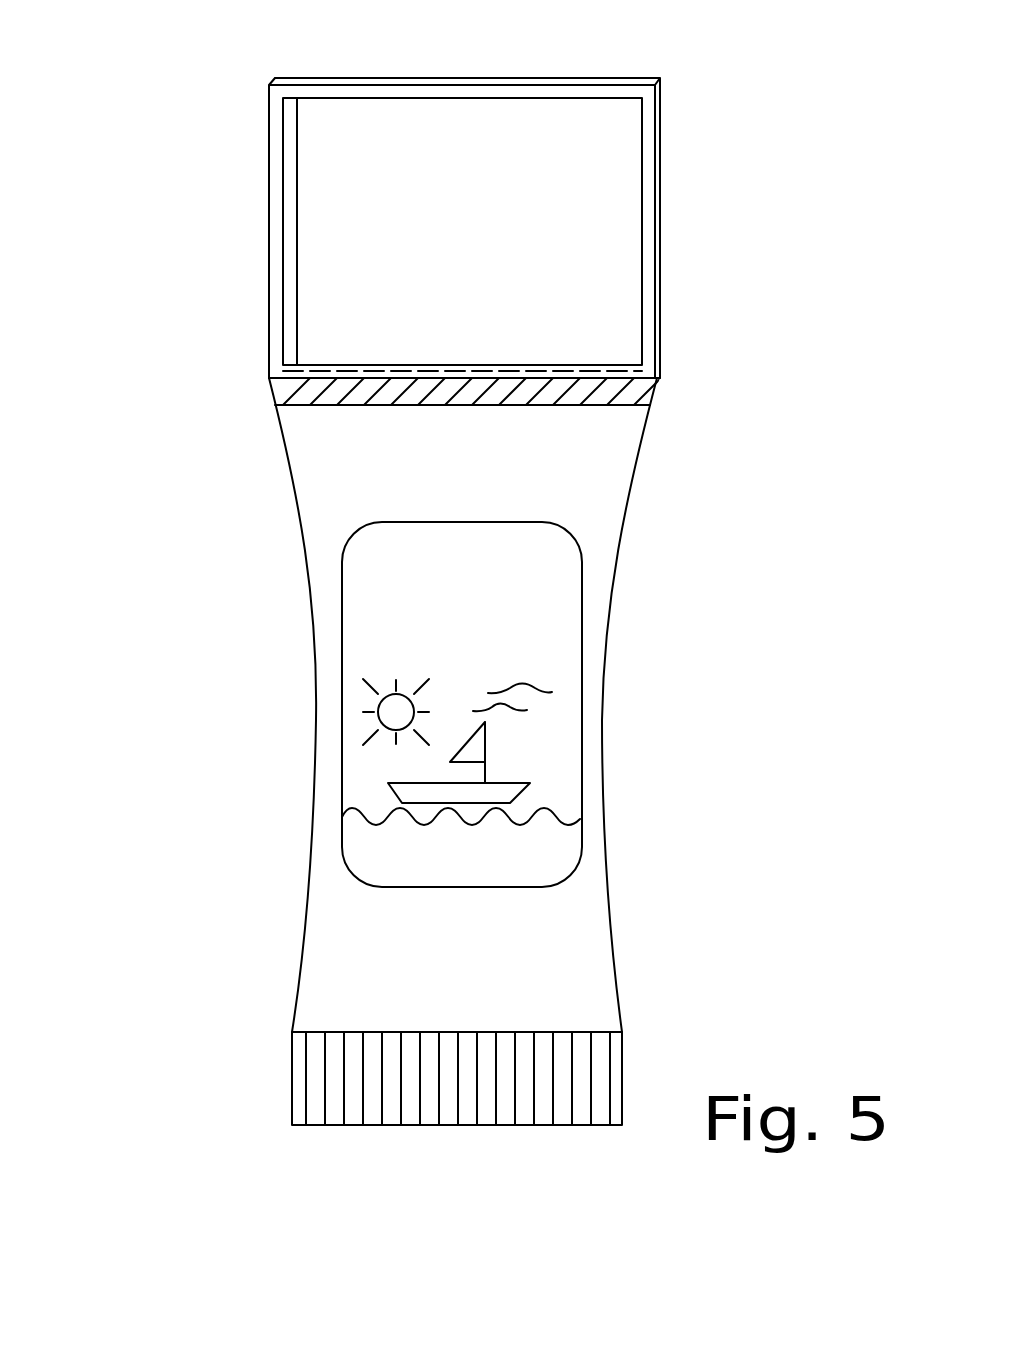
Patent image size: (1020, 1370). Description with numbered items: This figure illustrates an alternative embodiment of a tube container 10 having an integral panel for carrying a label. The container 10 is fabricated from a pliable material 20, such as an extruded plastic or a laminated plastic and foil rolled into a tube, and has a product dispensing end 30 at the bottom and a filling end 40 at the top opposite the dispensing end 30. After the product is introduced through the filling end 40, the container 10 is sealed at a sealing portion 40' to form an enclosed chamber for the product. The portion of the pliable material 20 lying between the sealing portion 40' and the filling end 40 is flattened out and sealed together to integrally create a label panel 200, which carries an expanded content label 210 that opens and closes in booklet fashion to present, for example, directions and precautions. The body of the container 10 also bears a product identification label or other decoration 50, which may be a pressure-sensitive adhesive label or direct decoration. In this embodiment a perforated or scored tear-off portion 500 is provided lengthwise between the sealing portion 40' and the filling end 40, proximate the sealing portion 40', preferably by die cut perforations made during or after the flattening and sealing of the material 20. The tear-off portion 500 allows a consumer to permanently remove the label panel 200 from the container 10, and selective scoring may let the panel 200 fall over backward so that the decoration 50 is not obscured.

The tube container 10 is at (125, 878).
The pliable material 20 is at (330, 660).
The product dispensing end 30 is at (292, 1077).
The filling end 40 is at (524, 198).
The sealing portion 40' is at (396, 398).
The product identification label or other decoration 50 is at (550, 715).
The label panel 200 is at (830, 185).
The expanded content label 210 is at (830, 242).
The tear-off portion 500 is at (465, 372).